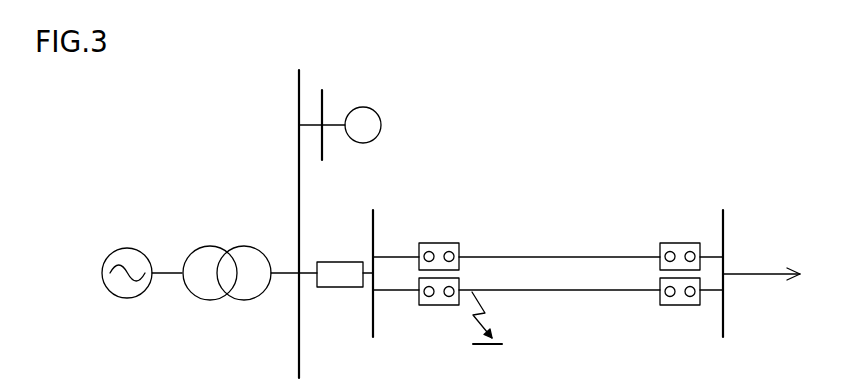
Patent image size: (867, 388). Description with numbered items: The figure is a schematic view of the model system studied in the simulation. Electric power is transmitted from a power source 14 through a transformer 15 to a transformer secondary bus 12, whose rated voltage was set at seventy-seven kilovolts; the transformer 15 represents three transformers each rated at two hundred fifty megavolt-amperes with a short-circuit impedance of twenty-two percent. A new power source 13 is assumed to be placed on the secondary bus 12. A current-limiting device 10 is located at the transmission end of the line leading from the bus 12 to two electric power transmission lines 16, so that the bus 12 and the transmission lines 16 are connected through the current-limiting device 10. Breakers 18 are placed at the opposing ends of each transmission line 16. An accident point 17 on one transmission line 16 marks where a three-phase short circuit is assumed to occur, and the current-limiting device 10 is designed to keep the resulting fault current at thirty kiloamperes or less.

The current-limiting device 10 is at (342, 287).
The transformer secondary bus 12 is at (300, 185).
The new power source 13 is at (377, 108).
The power source 14 is at (113, 250).
The transformer 15 is at (225, 297).
The electric power transmission lines 16 is at (593, 256).
The accident point 17 is at (473, 292).
The breakers 18 is at (446, 243).